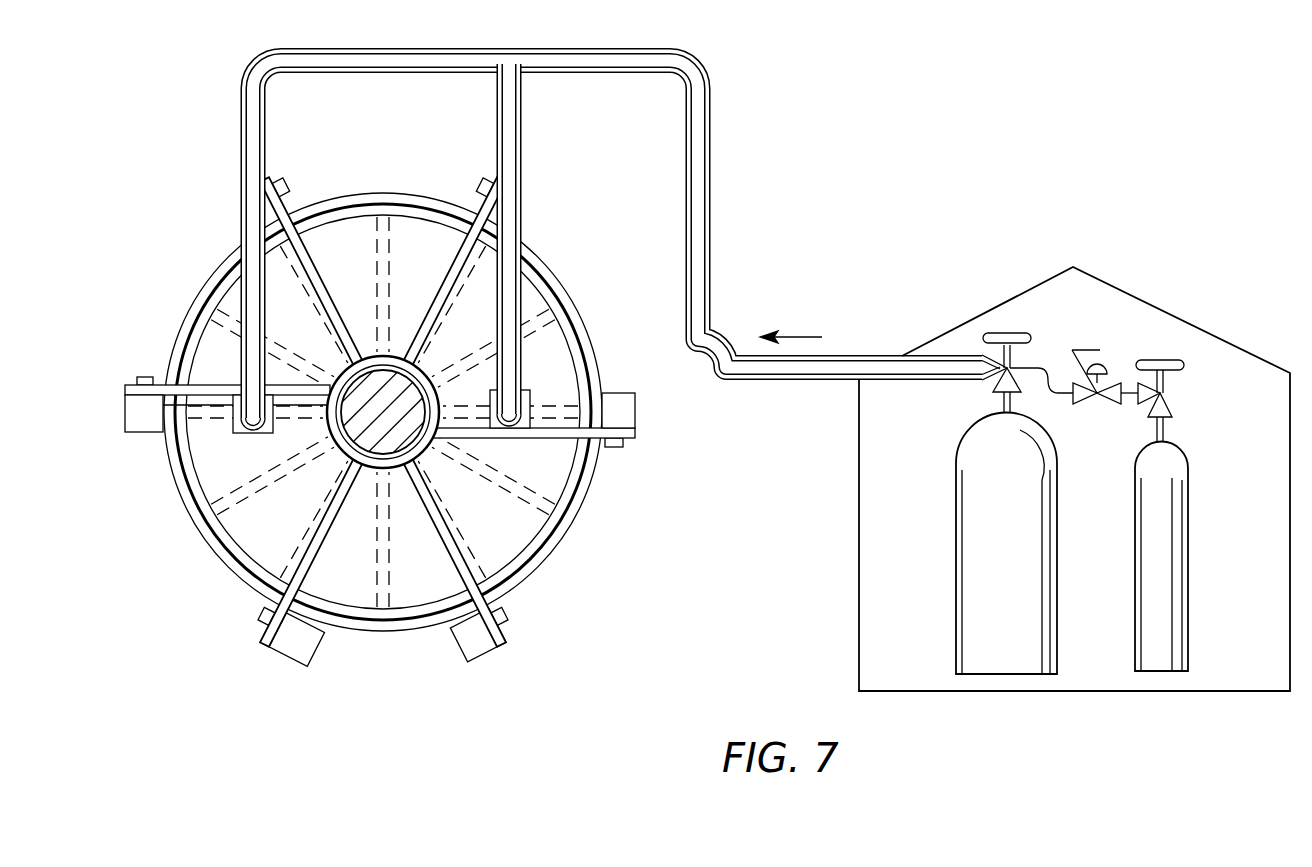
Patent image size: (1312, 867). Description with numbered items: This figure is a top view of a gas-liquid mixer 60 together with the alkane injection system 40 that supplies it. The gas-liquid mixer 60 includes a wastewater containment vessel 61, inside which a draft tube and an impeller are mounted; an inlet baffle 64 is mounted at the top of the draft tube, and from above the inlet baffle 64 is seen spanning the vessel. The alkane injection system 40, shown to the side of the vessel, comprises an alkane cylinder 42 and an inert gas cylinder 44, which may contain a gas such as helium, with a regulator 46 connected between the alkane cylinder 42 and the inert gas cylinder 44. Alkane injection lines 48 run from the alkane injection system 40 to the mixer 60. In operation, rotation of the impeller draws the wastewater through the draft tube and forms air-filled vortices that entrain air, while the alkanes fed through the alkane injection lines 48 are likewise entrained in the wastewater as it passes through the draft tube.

The alkane injection system 40 is at (1074, 424).
The alkane cylinder 42 is at (990, 590).
The inert gas cylinder 44 is at (1170, 570).
The regulator 46 is at (1097, 357).
The alkane injection line 48 is at (262, 128).
The gas-liquid mixer 60 is at (400, 419).
The wastewater containment vessel 61 is at (578, 497).
The inlet baffle 64 is at (207, 392).